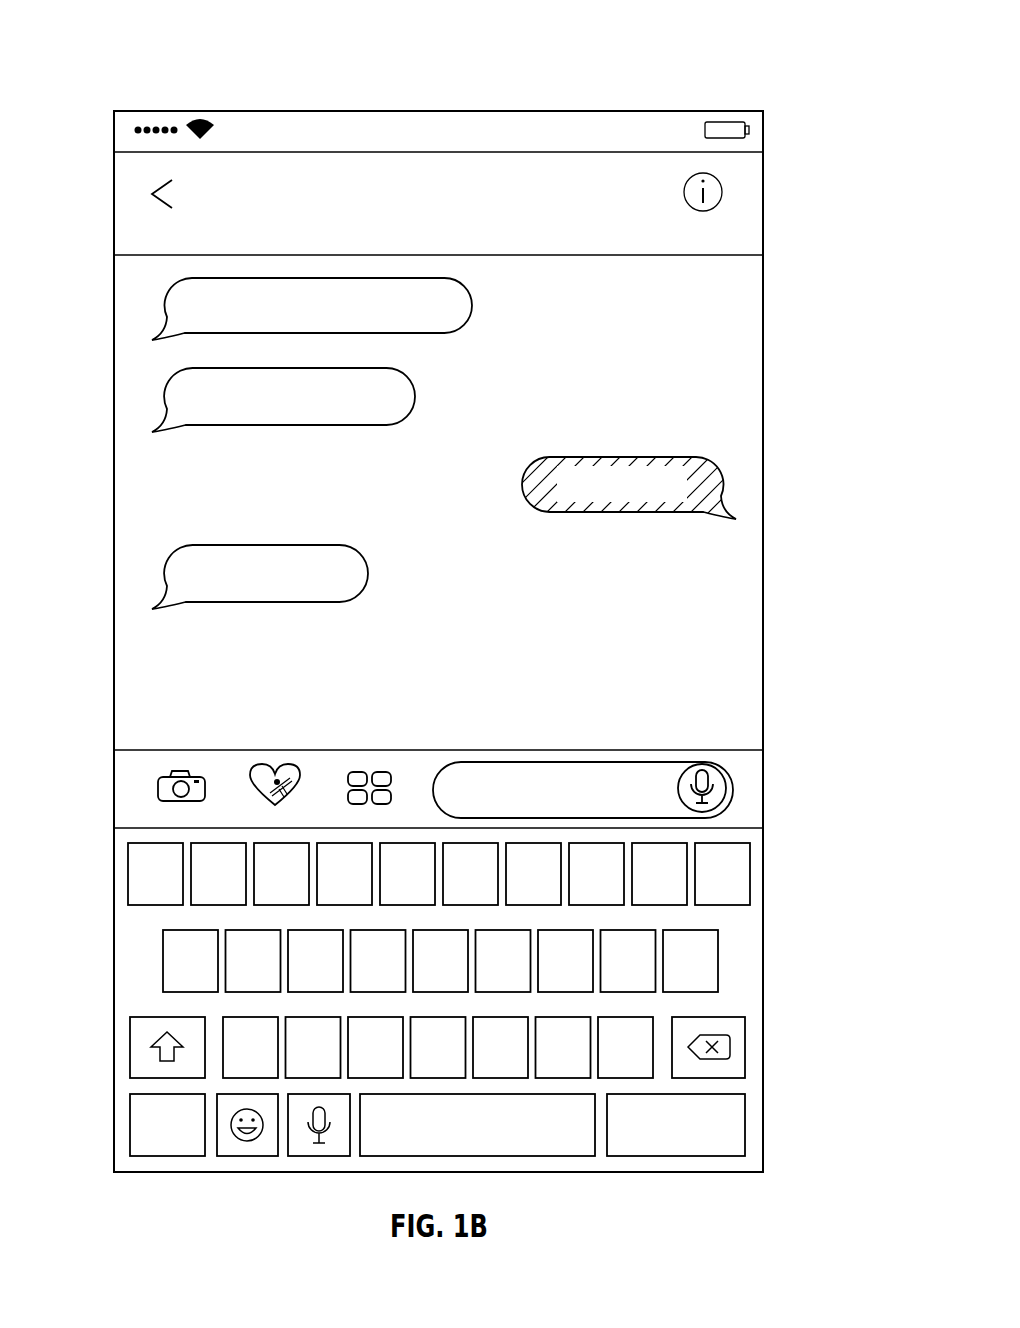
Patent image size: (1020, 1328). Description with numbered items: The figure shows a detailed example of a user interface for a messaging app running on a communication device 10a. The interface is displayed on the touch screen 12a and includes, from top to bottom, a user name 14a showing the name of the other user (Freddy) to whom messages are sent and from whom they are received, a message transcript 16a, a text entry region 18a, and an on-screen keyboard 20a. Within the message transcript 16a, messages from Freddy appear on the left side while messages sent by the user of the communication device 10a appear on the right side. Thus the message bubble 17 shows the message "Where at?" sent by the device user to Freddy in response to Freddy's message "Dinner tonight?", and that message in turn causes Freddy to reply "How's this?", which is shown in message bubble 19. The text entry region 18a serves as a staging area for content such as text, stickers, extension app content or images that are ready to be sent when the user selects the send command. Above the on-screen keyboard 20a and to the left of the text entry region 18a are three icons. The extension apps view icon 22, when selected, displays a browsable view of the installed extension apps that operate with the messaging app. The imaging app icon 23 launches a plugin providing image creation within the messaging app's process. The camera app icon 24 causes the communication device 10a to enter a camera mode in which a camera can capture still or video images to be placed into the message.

The communication device 10a is at (106, 44).
The touch screen 12a is at (113, 508).
The user name 14a is at (487, 225).
The message transcript 16a is at (690, 363).
The message bubble 17 is at (623, 513).
The text entry region 18a is at (583, 762).
The message bubble 19 is at (267, 603).
The on-screen keyboard 20a is at (744, 963).
The extension apps view icon 22 is at (366, 767).
The imaging app icon 23 is at (265, 763).
The camera app icon 24 is at (184, 771).